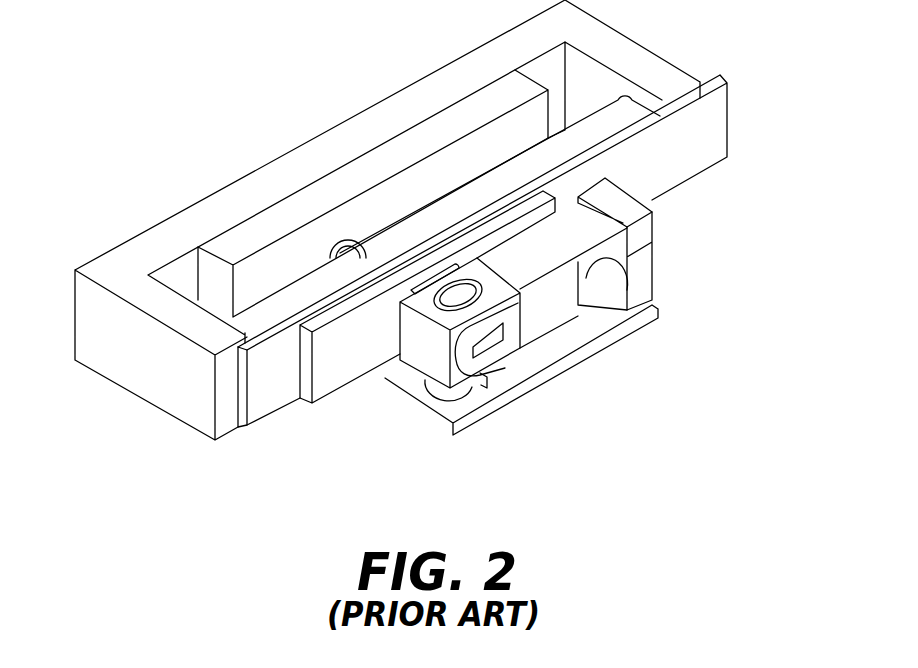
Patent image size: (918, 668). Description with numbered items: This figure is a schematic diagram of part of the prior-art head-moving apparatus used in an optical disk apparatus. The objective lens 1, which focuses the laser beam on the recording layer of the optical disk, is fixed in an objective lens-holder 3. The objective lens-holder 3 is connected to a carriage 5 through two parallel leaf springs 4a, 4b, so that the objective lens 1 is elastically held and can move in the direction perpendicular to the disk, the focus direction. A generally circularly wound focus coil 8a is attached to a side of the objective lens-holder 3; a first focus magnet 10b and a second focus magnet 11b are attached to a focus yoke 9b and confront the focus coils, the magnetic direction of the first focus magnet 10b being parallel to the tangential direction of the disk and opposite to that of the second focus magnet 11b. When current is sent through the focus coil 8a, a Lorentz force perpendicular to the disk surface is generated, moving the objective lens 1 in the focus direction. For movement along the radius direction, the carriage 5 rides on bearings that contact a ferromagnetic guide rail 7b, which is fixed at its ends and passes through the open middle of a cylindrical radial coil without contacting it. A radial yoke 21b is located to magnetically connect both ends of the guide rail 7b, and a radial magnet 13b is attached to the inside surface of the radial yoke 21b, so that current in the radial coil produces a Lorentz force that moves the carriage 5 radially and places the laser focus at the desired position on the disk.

The objective lens 1 is at (457, 300).
The objective lens-holder 3 is at (413, 357).
The leaf spring 4a is at (597, 223).
The leaf spring 4b is at (555, 278).
The carriage 5 is at (642, 230).
The guide rail 7b is at (627, 110).
The focus coil 8a is at (497, 355).
The focus yoke 9b is at (717, 117).
The first focus magnet 10b is at (323, 350).
The second focus magnet 11b is at (347, 393).
The radial magnet 13b is at (313, 240).
The radial yoke 21b is at (143, 385).